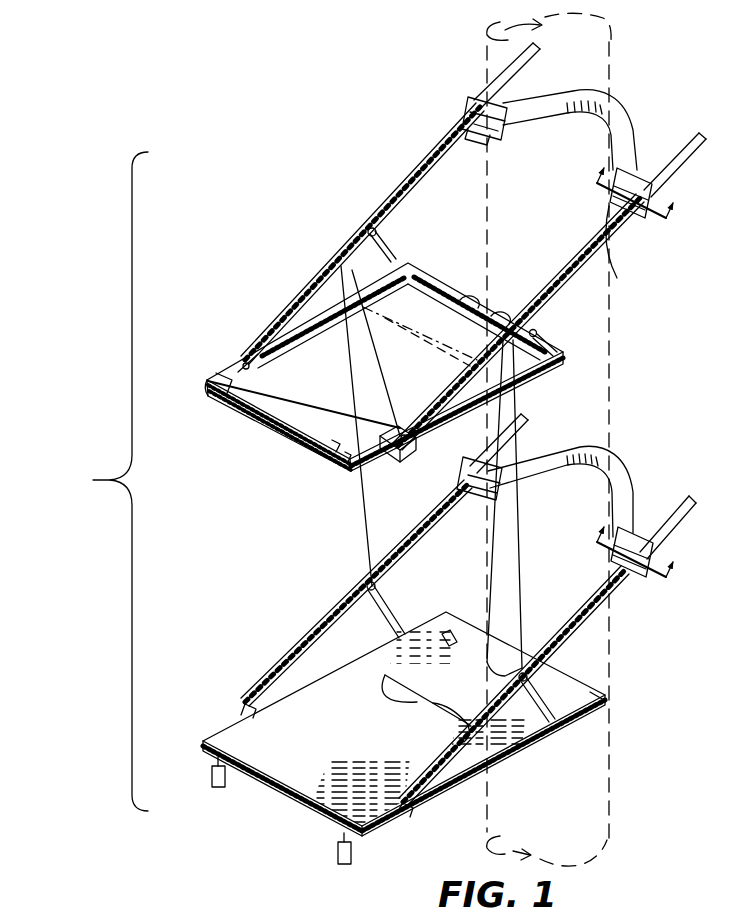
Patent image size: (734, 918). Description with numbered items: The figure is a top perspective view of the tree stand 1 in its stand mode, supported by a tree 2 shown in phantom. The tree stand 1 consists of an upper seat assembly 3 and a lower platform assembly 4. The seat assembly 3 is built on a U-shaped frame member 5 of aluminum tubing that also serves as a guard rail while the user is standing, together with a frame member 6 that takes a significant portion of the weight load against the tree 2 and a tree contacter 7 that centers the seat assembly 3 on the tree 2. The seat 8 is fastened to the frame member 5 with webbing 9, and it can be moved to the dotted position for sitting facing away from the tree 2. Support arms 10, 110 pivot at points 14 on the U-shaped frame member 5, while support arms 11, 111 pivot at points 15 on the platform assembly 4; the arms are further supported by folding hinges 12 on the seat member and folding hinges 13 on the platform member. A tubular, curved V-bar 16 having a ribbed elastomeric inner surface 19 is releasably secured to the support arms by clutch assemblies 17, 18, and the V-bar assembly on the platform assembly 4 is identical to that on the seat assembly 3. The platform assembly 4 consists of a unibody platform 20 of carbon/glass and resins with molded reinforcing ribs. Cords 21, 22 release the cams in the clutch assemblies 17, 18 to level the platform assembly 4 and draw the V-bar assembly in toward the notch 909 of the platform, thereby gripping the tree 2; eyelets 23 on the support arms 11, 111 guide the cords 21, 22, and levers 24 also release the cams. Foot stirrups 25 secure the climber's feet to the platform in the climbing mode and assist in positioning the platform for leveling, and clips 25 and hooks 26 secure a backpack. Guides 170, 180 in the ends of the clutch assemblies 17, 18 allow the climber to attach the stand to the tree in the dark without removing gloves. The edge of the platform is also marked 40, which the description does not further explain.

The tree stand 1 is at (84, 480).
The tree 2 is at (596, 340).
The seat assembly 3 is at (246, 250).
The platform assembly 4 is at (246, 590).
The U-shaped frame member 5 is at (322, 333).
The frame member 6 is at (448, 293).
The tree contacter 7 is at (478, 294).
The seat 8 is at (211, 393).
The webbing 9 is at (262, 383).
The support arm 10 is at (378, 209).
The support arm 11 is at (305, 640).
The folding hinge 12 is at (385, 250).
The folding hinge 13 is at (396, 622).
The pivot point 14 is at (243, 370).
The pivot point 15 is at (243, 712).
The V-bar 16 is at (632, 86).
The clutch assembly 17 is at (463, 110).
The clutch assembly 18 is at (615, 207).
The ribbed elastomeric inner surface 19 is at (593, 118).
The unibody platform 20 is at (212, 739).
The cord 21 is at (609, 600).
The cord 22 is at (341, 289).
The eyelet 23 is at (375, 590).
The lever 24 is at (641, 216).
The foot stirrup 25 is at (402, 690).
The hook 26 is at (452, 630).
The platform edge 40 is at (301, 806).
The support arm 110 is at (580, 258).
The support arm 111 is at (503, 700).
The guide 170 is at (478, 135).
The guide 180 is at (628, 251).
The notch 909 is at (489, 660).